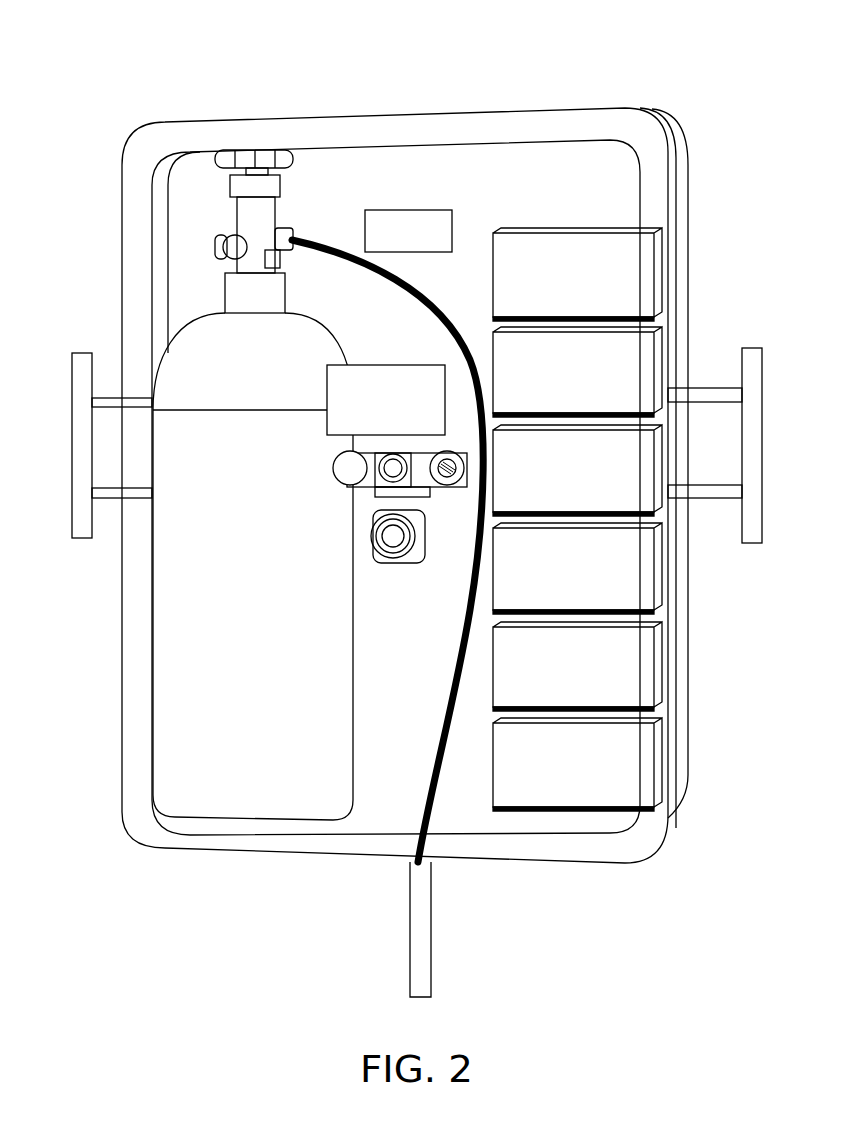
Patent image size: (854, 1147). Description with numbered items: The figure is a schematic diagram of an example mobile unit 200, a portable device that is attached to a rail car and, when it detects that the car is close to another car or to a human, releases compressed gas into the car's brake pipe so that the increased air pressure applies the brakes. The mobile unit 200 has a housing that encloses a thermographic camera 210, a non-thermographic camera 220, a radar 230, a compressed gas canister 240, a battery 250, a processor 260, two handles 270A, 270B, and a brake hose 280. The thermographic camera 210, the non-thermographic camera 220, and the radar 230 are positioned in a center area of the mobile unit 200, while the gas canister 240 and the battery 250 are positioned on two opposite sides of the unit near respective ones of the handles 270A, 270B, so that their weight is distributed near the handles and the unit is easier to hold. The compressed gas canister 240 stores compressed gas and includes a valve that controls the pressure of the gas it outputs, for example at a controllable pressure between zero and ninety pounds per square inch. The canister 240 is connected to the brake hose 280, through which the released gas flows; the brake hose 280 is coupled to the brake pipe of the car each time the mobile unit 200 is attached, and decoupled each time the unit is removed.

The mobile unit 200 is at (226, 62).
The thermographic camera 210 is at (410, 566).
The non-thermographic camera 220 is at (433, 492).
The radar 230 is at (373, 365).
The compressed gas canister 240 is at (300, 316).
The battery 250 is at (577, 519).
The processor 260 is at (412, 210).
The handle 270A is at (82, 352).
The handle 270B is at (746, 348).
The brake hose 280 is at (432, 952).